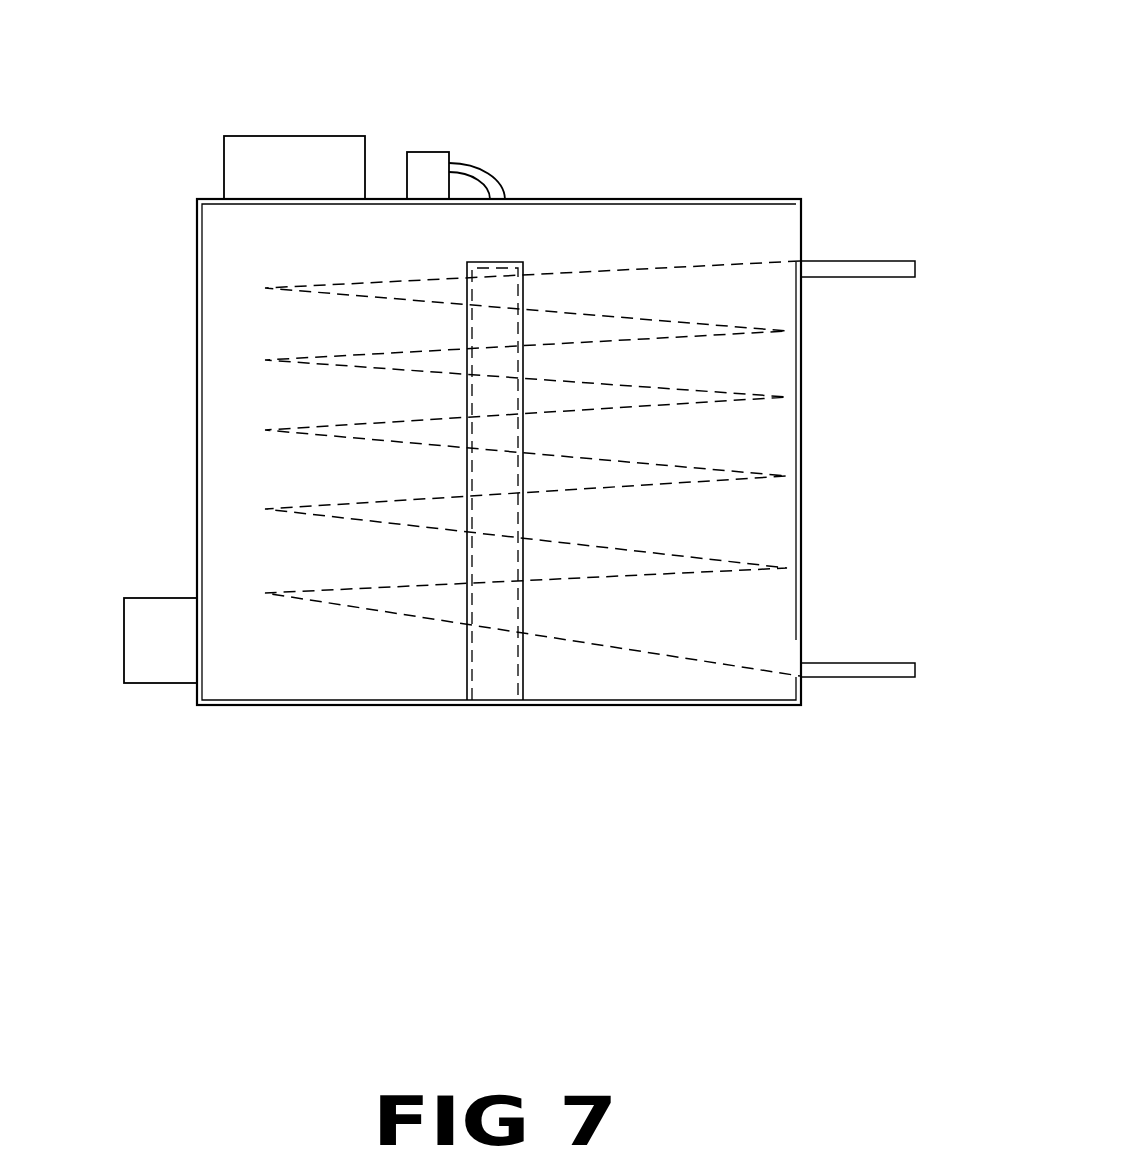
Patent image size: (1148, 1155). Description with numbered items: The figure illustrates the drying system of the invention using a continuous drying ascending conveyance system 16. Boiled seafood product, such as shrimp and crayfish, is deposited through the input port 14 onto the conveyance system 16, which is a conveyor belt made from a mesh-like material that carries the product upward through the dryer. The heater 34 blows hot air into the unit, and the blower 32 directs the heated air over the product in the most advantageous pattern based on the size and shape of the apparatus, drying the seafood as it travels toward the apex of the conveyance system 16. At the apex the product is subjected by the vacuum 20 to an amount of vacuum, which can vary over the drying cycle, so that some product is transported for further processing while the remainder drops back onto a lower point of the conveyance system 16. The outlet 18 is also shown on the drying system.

The intake port 14 is at (800, 232).
The continuous drying ascending conveyance system 16 is at (627, 268).
The outlet 18 is at (800, 657).
The vacuum member 20 is at (428, 152).
The blower 32 is at (145, 598).
The heater 34 is at (298, 136).